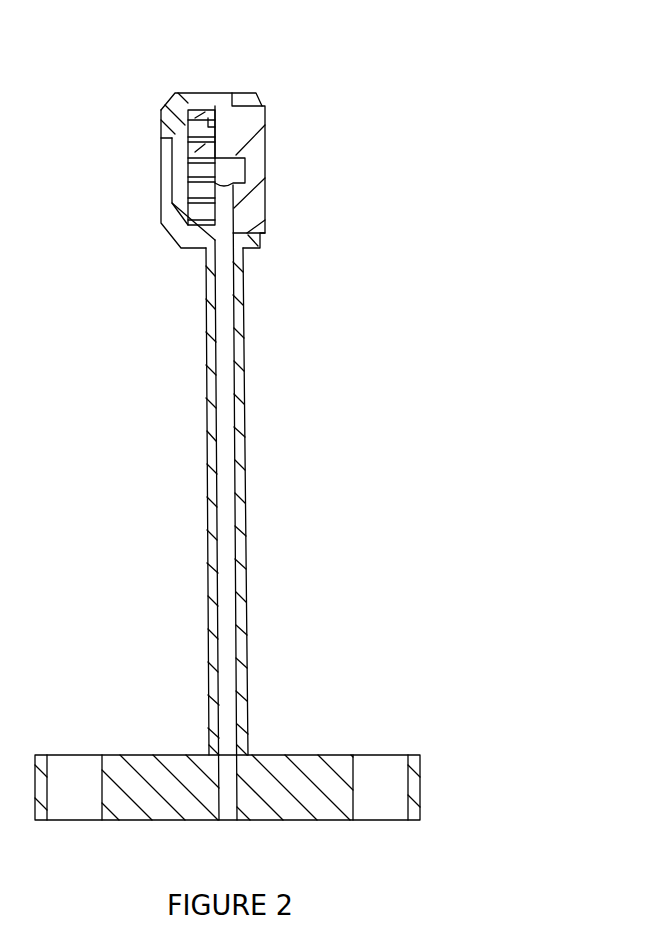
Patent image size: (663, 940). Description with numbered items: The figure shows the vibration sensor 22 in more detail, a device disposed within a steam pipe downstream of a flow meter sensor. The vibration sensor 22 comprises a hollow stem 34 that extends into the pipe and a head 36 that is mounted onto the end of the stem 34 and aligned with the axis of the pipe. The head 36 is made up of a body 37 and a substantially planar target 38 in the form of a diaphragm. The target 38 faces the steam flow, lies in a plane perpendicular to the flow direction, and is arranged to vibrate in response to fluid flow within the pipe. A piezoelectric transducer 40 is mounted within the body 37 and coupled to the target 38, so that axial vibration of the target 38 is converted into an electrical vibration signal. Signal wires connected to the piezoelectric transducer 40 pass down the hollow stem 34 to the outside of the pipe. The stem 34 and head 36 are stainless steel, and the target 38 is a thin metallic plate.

The vibration sensor 22 is at (445, 253).
The hollow stem 34 is at (244, 483).
The head 36 is at (286, 110).
The body 37 is at (232, 97).
The target 38 is at (185, 184).
The piezoelectric transducer 40 is at (212, 110).